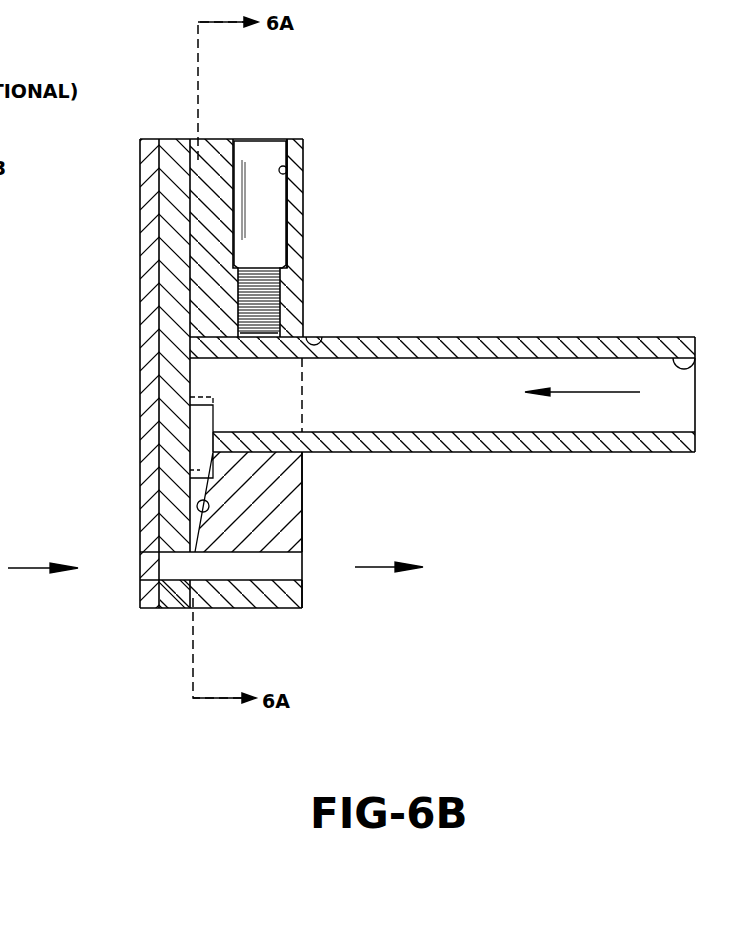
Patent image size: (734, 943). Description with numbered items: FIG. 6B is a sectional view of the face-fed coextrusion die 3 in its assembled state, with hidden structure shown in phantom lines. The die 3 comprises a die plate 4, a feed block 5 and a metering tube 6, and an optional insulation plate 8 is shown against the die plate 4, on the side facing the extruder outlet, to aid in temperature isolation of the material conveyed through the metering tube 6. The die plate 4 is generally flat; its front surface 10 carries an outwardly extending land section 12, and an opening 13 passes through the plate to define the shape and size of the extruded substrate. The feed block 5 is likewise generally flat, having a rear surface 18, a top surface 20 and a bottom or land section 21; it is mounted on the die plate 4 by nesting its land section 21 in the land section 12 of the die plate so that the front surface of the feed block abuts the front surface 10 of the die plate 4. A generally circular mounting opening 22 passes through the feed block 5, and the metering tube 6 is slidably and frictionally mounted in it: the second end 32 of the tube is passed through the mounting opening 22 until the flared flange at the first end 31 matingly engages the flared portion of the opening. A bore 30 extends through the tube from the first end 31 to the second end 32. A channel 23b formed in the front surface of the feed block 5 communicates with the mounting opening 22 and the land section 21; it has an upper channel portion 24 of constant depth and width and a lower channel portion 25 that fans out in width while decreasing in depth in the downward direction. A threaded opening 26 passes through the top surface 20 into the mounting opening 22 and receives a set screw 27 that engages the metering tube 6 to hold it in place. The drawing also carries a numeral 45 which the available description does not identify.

The face-fed coextrusion die 3 is at (483, 151).
The die plate 4 is at (308, 610).
The feed block 5 is at (310, 135).
The metering tube 6 is at (456, 338).
The insulation plate 8 is at (143, 138).
The front surface 10 is at (175, 138).
The land section 12 is at (180, 600).
The opening 13 is at (148, 567).
The rear surface 18 is at (303, 210).
The top surface 20 is at (222, 138).
The land section 21 is at (235, 545).
The mounting opening 22 is at (313, 337).
The channel 23b is at (208, 510).
The upper channel portion 24 is at (212, 452).
The lower channel portion 25 is at (196, 538).
The opening 26 is at (287, 170).
The set screw 27 is at (284, 292).
The bore 30 is at (696, 368).
The first end 31 is at (218, 334).
The second end 32 is at (638, 336).
The opening 45 is at (142, 576).